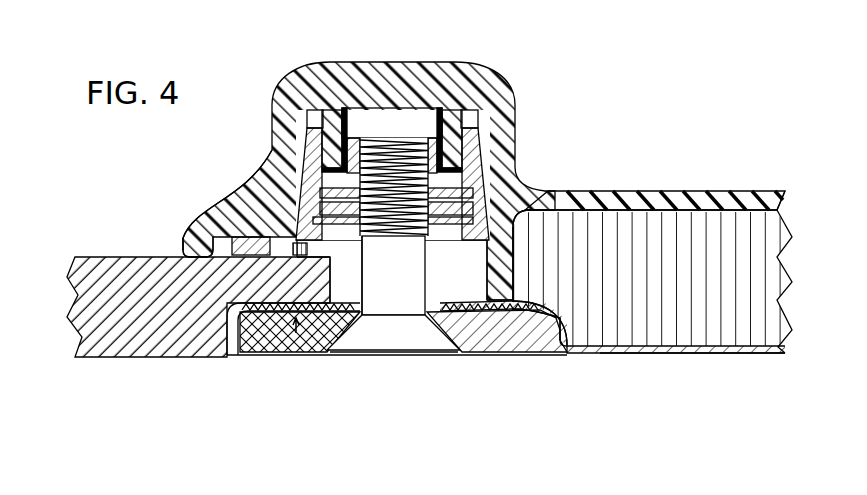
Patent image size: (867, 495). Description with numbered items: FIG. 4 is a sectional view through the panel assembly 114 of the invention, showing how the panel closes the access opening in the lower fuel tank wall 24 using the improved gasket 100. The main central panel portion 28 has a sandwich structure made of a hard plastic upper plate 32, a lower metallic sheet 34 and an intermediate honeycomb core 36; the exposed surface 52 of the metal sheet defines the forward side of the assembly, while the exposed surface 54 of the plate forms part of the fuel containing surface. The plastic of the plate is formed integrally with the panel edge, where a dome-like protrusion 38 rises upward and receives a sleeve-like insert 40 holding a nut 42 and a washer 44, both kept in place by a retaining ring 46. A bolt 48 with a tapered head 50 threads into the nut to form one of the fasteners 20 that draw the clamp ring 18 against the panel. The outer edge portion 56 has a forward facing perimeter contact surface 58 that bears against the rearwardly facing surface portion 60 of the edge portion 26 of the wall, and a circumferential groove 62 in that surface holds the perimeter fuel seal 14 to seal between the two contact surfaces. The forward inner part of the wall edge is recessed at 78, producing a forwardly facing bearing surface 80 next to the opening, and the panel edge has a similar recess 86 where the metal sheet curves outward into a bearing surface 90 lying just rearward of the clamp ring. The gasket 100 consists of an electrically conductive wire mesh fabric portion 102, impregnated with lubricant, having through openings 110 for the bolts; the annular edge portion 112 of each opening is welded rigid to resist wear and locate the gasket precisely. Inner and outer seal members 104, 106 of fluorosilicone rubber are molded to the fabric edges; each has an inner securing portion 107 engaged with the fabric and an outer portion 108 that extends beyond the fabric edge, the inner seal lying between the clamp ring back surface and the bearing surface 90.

The perimeter fuel seal 14 is at (237, 243).
The clamp ring 18 is at (537, 330).
The fasteners 20 is at (416, 312).
The lower fuel tank wall 24 is at (113, 357).
The edge portion of the wall 26 is at (265, 280).
The main central panel portion 28 is at (616, 258).
The upper sheet or plate 32 is at (727, 200).
The lower metallic sheet 34 is at (716, 350).
The intermediate core of honeycomb structure 36 is at (752, 220).
The dome-like protrusions 38 is at (463, 70).
The sleeve-like insert 40 is at (480, 148).
The nut 42 is at (303, 150).
The washer 44 is at (300, 172).
The retaining ring 46 is at (300, 190).
The bolt 48 is at (385, 300).
The tapered head 50 is at (397, 348).
The exterior surface 52 is at (702, 353).
The exposed surface of the plate 54 is at (712, 193).
The outer edge portion 56 is at (240, 200).
The perimeter contact surface 58 is at (200, 262).
The rearwardly facing surface portion 60 is at (200, 245).
The circumferential groove 62 is at (235, 225).
The recess 78 is at (242, 325).
The forwardly facing bearing surface 80 is at (288, 318).
The recess 86 is at (548, 330).
The bearing surface 90 is at (507, 330).
The gasket 100 is at (298, 315).
The wire mesh fabric portion 102 is at (488, 307).
The inner seal member 104 is at (523, 307).
The outer seal member 106 is at (275, 335).
The inner securing portion 107 is at (545, 300).
The outer portion 108 is at (527, 300).
The through openings 110 is at (368, 333).
The annular edge portion 112 is at (303, 357).
The panel assembly 114 is at (580, 338).